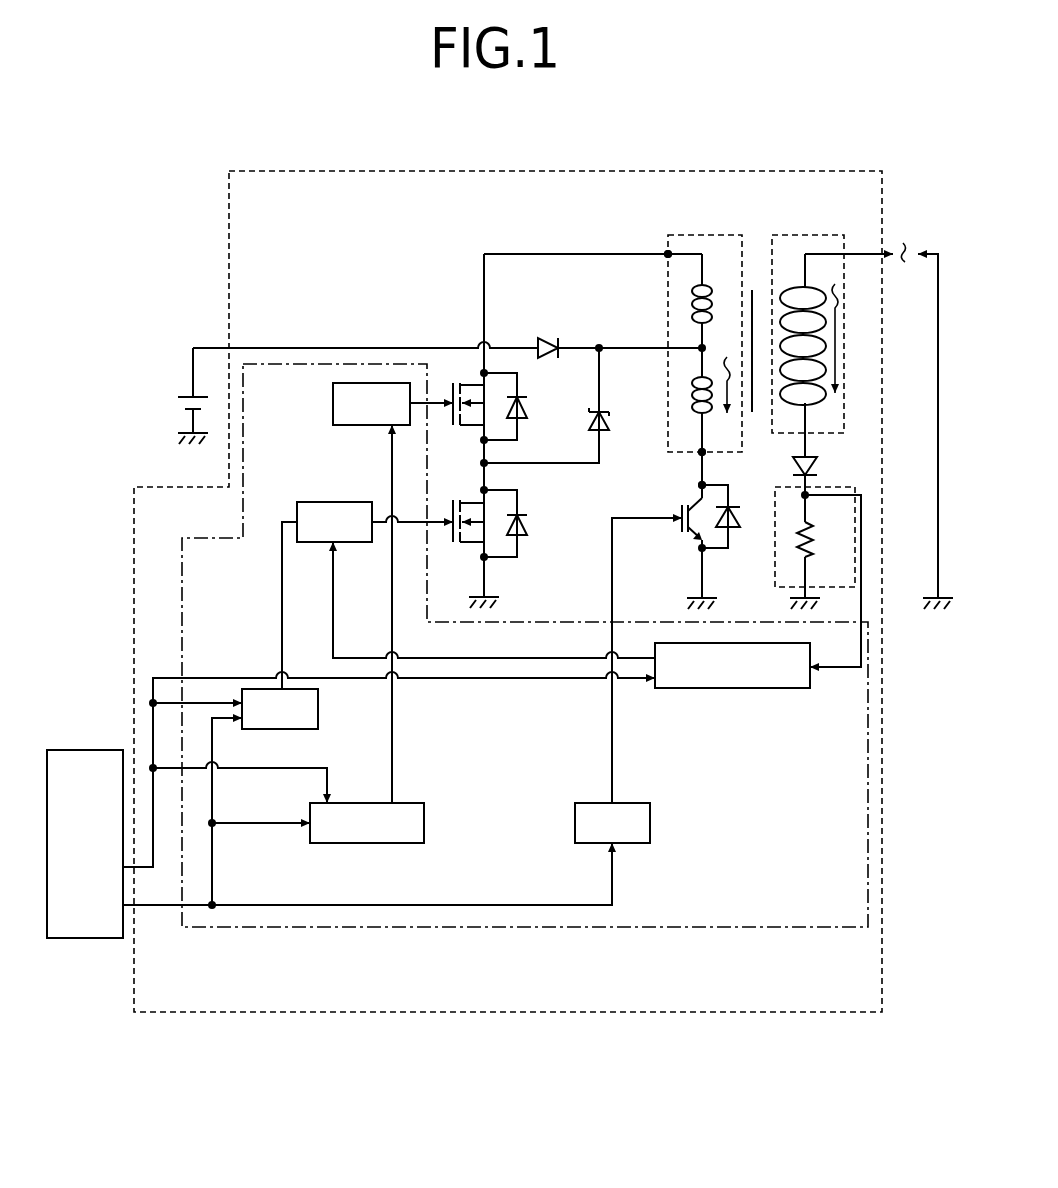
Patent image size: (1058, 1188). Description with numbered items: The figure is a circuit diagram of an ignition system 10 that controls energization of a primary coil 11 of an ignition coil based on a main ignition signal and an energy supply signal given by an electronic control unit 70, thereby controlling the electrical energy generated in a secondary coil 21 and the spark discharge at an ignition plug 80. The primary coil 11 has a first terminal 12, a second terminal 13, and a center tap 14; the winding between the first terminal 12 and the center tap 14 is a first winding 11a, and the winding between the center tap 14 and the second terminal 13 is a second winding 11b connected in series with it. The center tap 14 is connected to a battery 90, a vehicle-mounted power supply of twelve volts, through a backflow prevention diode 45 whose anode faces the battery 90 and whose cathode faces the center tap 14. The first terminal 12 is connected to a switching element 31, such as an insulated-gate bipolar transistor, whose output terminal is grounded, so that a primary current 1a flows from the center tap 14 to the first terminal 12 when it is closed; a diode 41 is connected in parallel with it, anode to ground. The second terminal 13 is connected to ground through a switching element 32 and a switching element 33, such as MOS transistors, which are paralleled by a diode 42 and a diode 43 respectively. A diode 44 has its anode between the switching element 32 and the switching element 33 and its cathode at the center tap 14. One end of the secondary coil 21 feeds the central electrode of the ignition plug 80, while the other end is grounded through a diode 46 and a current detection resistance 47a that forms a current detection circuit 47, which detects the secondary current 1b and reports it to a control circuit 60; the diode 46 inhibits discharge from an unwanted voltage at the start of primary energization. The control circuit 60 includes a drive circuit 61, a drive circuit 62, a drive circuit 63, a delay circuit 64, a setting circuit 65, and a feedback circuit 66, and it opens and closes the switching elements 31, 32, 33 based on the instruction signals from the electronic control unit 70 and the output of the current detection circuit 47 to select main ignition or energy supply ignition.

The ignition system 10 is at (635, 171).
The primary coil 11 is at (715, 233).
The first winding 11a is at (706, 410).
The second winding 11b is at (689, 302).
The first terminal 12 is at (701, 460).
The second terminal 13 is at (668, 254).
The center tap 14 is at (699, 348).
The primary current 1a is at (732, 372).
The secondary current 1b is at (830, 324).
The secondary coil 21 is at (815, 233).
The switching element 31 is at (682, 527).
The switching element 32 is at (452, 428).
The switching element 33 is at (452, 545).
The diode 41 is at (742, 516).
The diode 42 is at (522, 403).
The diode 43 is at (522, 521).
The diode 44 is at (603, 415).
The backflow prevention diode 45 is at (547, 339).
The diode 46 is at (817, 466).
The current detection circuit 47 is at (855, 546).
The current detection resistance 47a is at (814, 546).
The control circuit 60 is at (790, 930).
The drive circuit 61 is at (650, 823).
The drive circuit 62 is at (333, 400).
The drive circuit 63 is at (306, 502).
The delay circuit 64 is at (424, 823).
The setting circuit 65 is at (318, 709).
The feedback circuit 66 is at (770, 690).
The electronic control unit 70 is at (101, 756).
The ignition plug 80 is at (863, 238).
The battery 90 is at (180, 397).